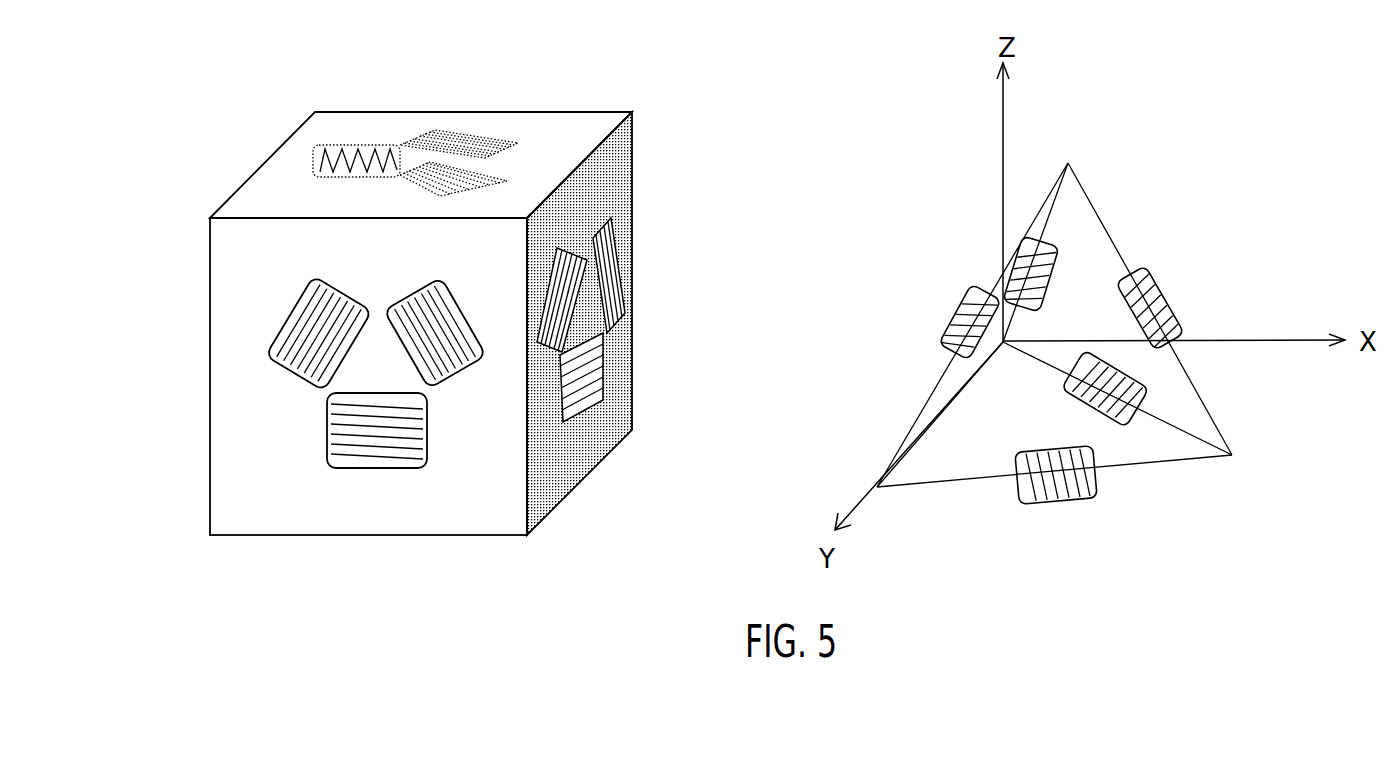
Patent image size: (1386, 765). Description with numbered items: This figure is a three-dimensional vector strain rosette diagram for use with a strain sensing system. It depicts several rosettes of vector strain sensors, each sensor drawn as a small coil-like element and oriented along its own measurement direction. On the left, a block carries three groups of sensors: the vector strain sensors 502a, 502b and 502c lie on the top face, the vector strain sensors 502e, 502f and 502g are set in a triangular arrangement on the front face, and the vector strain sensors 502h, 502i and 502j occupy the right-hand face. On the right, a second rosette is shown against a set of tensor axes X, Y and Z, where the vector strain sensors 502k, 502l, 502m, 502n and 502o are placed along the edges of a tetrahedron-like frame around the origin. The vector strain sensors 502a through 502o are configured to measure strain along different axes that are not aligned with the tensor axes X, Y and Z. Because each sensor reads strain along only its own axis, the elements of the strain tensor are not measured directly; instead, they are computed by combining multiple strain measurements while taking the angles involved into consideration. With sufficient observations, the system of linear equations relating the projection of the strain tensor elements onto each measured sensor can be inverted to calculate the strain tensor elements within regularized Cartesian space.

The vector strain sensor 502a is at (318, 158).
The vector strain sensor 502b is at (445, 130).
The vector strain sensor 502c is at (500, 177).
The vector strain sensor 502e is at (265, 355).
The vector strain sensor 502f is at (380, 468).
The vector strain sensor 502g is at (460, 370).
The vector strain sensor 502h is at (553, 357).
The vector strain sensor 502i is at (603, 367).
The vector strain sensor 502j is at (628, 265).
The vector strain sensor 502k is at (937, 352).
The vector strain sensor 502l is at (1100, 493).
The vector strain sensor 502m is at (1147, 393).
The vector strain sensor 502n is at (1152, 267).
The vector strain sensor 502o is at (1028, 237).